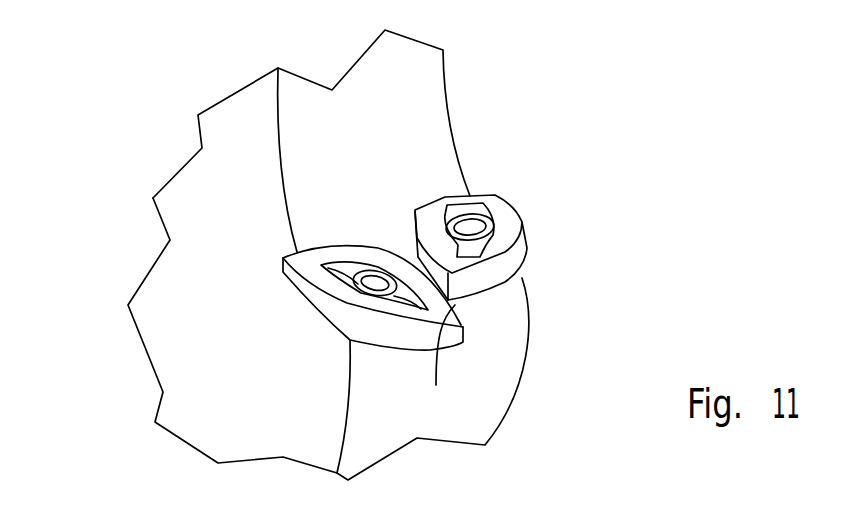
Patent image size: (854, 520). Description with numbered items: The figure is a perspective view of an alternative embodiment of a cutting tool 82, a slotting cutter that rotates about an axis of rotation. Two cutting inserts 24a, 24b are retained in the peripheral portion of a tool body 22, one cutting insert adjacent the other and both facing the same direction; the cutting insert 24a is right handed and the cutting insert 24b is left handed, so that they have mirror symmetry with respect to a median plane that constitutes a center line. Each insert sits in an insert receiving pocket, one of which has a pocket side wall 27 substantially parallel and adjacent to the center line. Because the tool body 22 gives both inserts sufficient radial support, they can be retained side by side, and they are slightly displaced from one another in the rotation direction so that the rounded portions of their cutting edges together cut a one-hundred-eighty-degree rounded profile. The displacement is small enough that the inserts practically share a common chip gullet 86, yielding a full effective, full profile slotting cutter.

The cutting tool 82 is at (376, 244).
The common chip gullet 86 is at (423, 145).
The tool body 22 is at (192, 344).
The cutting insert 24a is at (508, 222).
The cutting insert 24b is at (282, 258).
The pocket side wall 27 is at (446, 359).